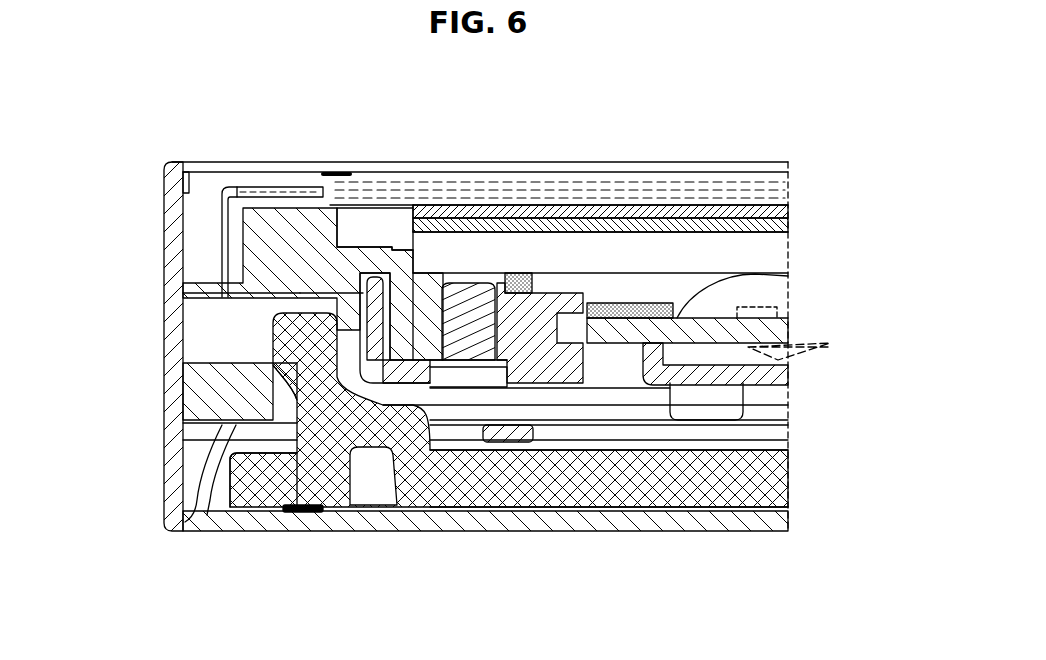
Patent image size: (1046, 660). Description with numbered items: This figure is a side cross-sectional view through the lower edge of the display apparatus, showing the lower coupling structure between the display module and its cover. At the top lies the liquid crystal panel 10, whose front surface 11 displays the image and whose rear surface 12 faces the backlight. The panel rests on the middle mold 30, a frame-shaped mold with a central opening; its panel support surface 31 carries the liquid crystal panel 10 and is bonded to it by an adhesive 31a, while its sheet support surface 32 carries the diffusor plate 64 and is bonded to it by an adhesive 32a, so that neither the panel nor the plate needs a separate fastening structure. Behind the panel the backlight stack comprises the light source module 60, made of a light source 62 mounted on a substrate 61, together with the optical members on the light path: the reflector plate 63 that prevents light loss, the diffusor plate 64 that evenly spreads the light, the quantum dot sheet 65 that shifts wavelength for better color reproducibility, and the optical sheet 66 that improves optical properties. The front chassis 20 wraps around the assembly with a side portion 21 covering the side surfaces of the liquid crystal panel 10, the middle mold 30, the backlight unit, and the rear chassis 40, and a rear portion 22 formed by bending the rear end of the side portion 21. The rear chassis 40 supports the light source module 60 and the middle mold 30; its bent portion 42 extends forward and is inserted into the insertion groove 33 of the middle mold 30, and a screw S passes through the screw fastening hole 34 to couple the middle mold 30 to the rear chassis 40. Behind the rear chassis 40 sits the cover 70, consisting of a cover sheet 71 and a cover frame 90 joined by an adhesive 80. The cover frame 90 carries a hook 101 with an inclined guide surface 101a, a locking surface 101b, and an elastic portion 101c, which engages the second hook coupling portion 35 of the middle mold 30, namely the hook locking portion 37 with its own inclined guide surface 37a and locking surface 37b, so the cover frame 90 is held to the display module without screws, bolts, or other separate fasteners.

The liquid crystal panel 10 is at (600, 190).
The front surface 11 is at (425, 195).
The rear surface 12 is at (362, 217).
The front chassis 20 is at (162, 183).
The side portion 21 is at (165, 214).
The rear portion 22 is at (173, 522).
The middle mold 30 is at (264, 232).
The panel support surface 31 is at (287, 187).
The adhesive 31a is at (329, 174).
The sheet support surface 32 is at (538, 308).
The adhesive 32a is at (528, 293).
The insertion groove 33 is at (413, 283).
The screw fastening hole 34 is at (435, 277).
The second hook coupling portion 35 is at (263, 382).
The hook locking portion 37 is at (504, 475).
The inclined guide surface 37a is at (273, 520).
The locking surface 37b is at (236, 523).
The rear chassis 40 is at (757, 378).
The bent portion 42 is at (363, 293).
The light source module 60 is at (753, 297).
The substrate 61 is at (752, 330).
The light source 62 is at (755, 294).
The reflector plate 63 is at (623, 310).
The diffusor plate 64 is at (667, 250).
The quantum dot sheet 65 is at (697, 228).
The optical sheet 66 is at (730, 212).
The cover 70 is at (551, 492).
The cover sheet 71 is at (772, 522).
The adhesive 80 is at (320, 513).
The cover frame 90 is at (772, 468).
The hook 101 is at (175, 360).
The inclined guide surface 101a is at (350, 350).
The locking surface 101b is at (294, 406).
The elastic portion 101c is at (298, 378).
The screw S is at (473, 380).